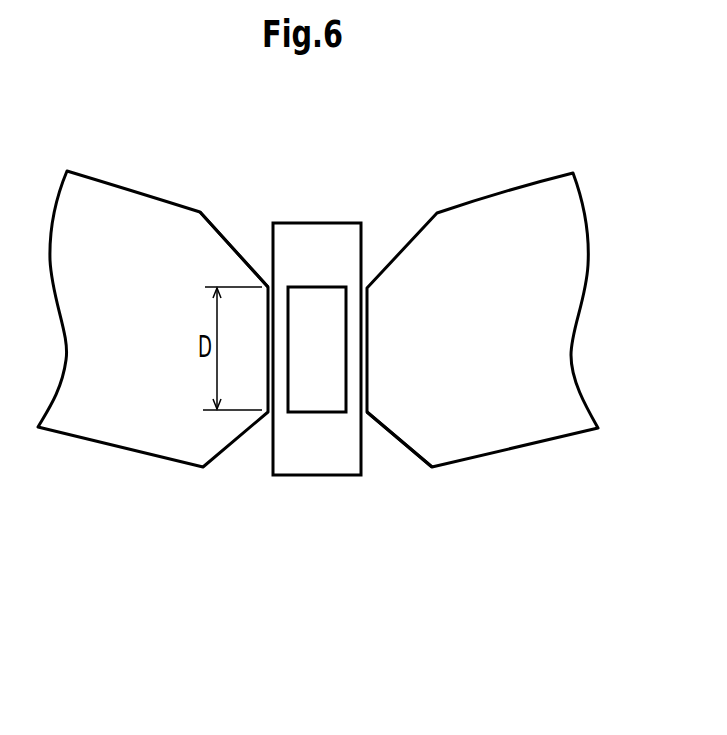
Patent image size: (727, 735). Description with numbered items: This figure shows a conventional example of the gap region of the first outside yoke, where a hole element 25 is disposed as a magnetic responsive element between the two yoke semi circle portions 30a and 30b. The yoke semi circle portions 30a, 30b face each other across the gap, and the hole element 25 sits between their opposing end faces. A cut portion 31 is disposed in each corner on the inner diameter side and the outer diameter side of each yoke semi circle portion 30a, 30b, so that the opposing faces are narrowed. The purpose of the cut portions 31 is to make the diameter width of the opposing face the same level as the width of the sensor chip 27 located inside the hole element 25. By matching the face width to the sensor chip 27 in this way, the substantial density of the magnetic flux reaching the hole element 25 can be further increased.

The yoke semi circle portion 30a is at (143, 440).
The yoke semi circle portion 30b is at (538, 440).
The cut portion 31 is at (230, 243).
The hole element 25 is at (307, 475).
The sensor chip 27 is at (325, 298).